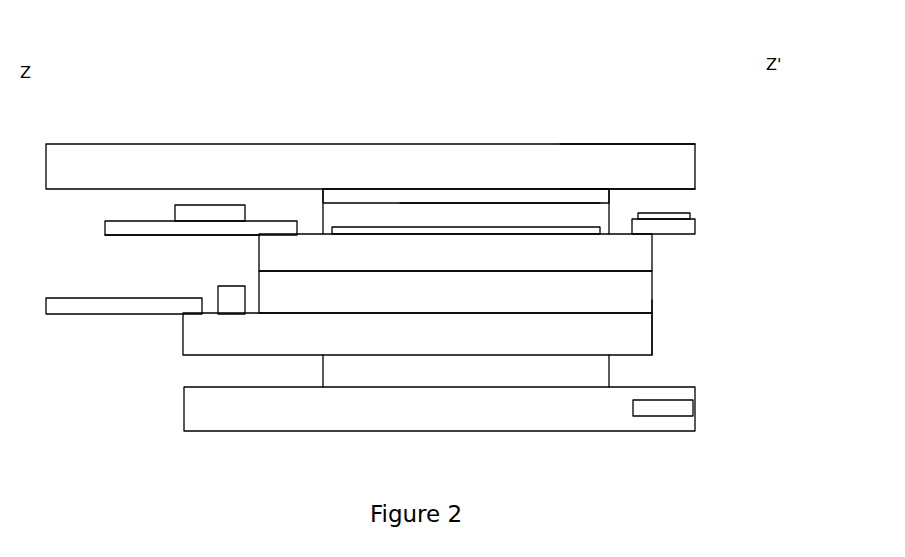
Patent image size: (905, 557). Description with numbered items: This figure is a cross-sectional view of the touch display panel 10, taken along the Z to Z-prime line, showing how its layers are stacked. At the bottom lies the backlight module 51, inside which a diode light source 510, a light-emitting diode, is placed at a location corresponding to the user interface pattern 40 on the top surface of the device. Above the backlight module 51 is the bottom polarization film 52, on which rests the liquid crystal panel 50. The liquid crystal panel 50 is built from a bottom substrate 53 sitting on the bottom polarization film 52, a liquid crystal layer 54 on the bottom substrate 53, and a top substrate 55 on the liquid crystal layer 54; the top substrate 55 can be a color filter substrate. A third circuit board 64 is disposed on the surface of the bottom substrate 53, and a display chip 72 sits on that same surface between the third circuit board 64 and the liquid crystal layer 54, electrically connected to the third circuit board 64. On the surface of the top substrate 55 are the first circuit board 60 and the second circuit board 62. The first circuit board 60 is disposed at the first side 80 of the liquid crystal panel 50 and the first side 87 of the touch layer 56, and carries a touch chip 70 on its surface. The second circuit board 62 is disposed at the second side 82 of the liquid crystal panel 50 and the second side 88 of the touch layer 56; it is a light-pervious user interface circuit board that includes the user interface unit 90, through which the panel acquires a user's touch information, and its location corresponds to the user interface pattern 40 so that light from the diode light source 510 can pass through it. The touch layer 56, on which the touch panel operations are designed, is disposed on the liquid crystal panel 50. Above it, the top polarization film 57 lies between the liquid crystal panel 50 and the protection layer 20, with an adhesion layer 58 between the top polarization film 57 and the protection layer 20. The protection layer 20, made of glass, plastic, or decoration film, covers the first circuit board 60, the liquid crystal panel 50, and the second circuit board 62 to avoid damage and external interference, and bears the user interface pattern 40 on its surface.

The touch display panel 10 is at (780, 34).
The protection layer 20 is at (180, 157).
The user interface pattern 40 is at (654, 132).
The liquid crystal panel 50 is at (498, 294).
The backlight module 51 is at (585, 413).
The diode light source 510 is at (668, 410).
The bottom polarization film 52 is at (600, 363).
The bottom substrate 53 is at (633, 328).
The liquid crystal layer 54 is at (641, 291).
The top substrate 55 is at (640, 255).
The touch layer 56 is at (380, 232).
The top polarization film 57 is at (586, 218).
The adhesion layer 58 is at (422, 197).
The first circuit board 60 is at (128, 222).
The second circuit board 62 is at (683, 228).
The third circuit board 64 is at (147, 310).
The touch chip 70 is at (210, 216).
The display chip 72 is at (233, 297).
The first side of the liquid crystal panel 80 is at (78, 257).
The second side of the liquid crystal panel 82 is at (720, 346).
The first side of the touch layer 87 is at (309, 205).
The second side of the touch layer 88 is at (621, 204).
The user interface unit 90 is at (673, 212).